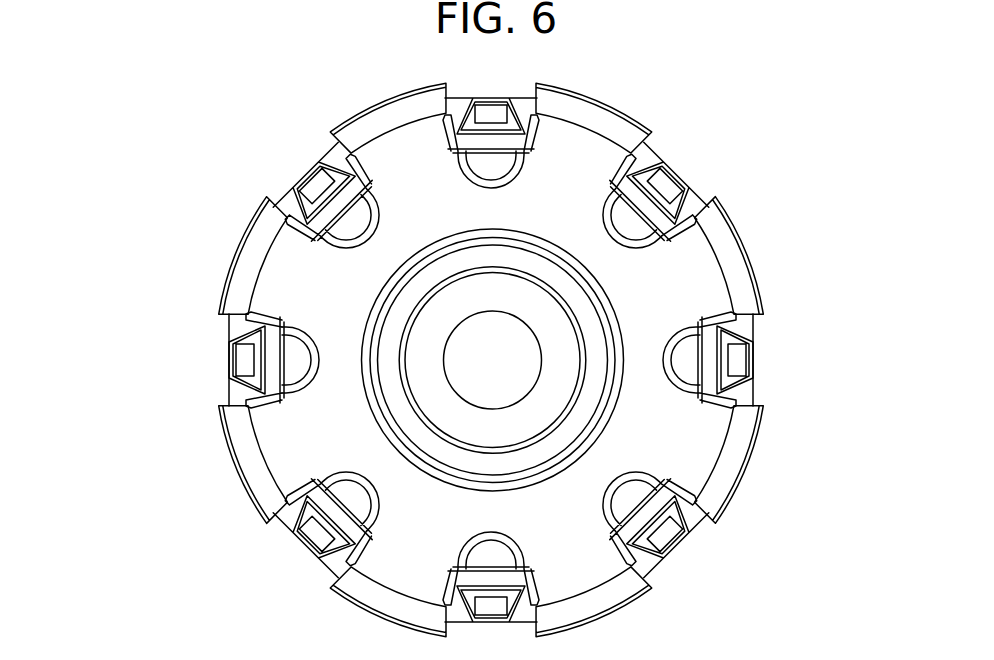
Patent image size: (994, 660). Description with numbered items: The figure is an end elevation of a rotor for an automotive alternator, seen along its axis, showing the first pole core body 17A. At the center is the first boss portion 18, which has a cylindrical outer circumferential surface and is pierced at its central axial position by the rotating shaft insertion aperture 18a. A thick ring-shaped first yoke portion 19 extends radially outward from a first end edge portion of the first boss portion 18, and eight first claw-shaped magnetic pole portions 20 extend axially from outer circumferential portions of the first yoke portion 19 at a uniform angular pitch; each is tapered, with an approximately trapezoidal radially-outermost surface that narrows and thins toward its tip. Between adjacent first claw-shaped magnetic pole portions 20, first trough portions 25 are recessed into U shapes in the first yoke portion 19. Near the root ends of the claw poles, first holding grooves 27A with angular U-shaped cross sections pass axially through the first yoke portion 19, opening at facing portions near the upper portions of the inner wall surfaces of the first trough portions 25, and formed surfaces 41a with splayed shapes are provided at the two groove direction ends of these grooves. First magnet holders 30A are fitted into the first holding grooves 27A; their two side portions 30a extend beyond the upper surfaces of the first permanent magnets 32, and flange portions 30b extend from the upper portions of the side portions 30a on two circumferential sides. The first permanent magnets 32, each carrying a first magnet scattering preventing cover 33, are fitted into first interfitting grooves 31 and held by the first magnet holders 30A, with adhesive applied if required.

The first pole core body 17A is at (237, 242).
The first boss portion 18 is at (593, 390).
The rotating shaft insertion aperture 18a is at (457, 388).
The first yoke portion 19 is at (307, 432).
The first claw-shaped magnetic pole portions 20 is at (242, 453).
The first trough portions 25 is at (297, 360).
The first holding grooves 27A is at (235, 328).
The first magnet holders 30A is at (665, 157).
The side portions 30a is at (687, 218).
The flange portions 30b is at (698, 207).
The first interfitting grooves 31 is at (760, 308).
The first permanent magnets 32 is at (725, 370).
The first magnet scattering preventing covers 33 is at (750, 370).
The formed surfaces 41a is at (345, 555).